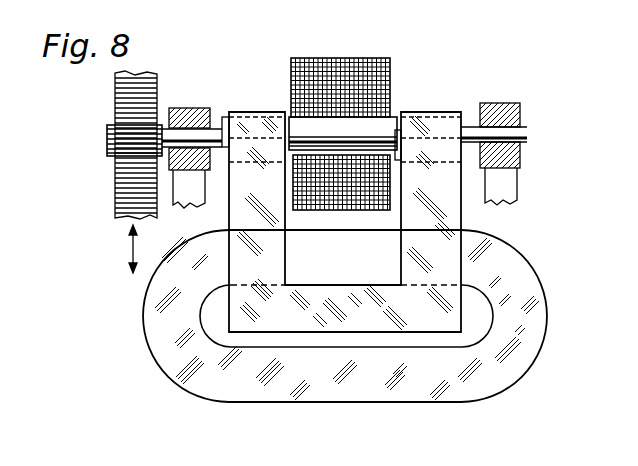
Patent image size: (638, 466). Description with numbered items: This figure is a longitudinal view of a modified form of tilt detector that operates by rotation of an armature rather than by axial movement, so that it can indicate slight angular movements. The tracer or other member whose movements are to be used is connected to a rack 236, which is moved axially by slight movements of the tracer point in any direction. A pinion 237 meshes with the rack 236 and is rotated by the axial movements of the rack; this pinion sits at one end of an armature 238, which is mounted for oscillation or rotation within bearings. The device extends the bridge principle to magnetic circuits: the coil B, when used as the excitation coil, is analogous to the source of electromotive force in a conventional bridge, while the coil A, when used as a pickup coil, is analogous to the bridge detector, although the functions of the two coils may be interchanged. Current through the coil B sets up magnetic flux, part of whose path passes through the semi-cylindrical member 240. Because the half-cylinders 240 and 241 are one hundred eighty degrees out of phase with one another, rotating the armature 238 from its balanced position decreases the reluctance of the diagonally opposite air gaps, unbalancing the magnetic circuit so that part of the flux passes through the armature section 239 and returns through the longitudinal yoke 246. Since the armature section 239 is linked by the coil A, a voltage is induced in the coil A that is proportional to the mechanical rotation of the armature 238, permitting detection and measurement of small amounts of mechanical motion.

The rack 236 is at (128, 203).
The pinion 237 is at (107, 132).
The armature 238 is at (573, 127).
The armature section 239 is at (380, 127).
The semi-cylindrical member 240 is at (221, 117).
The half-cylinder 241 is at (462, 160).
The longitudinal yoke 246 is at (263, 320).
The coil A is at (390, 68).
The coil B is at (524, 362).